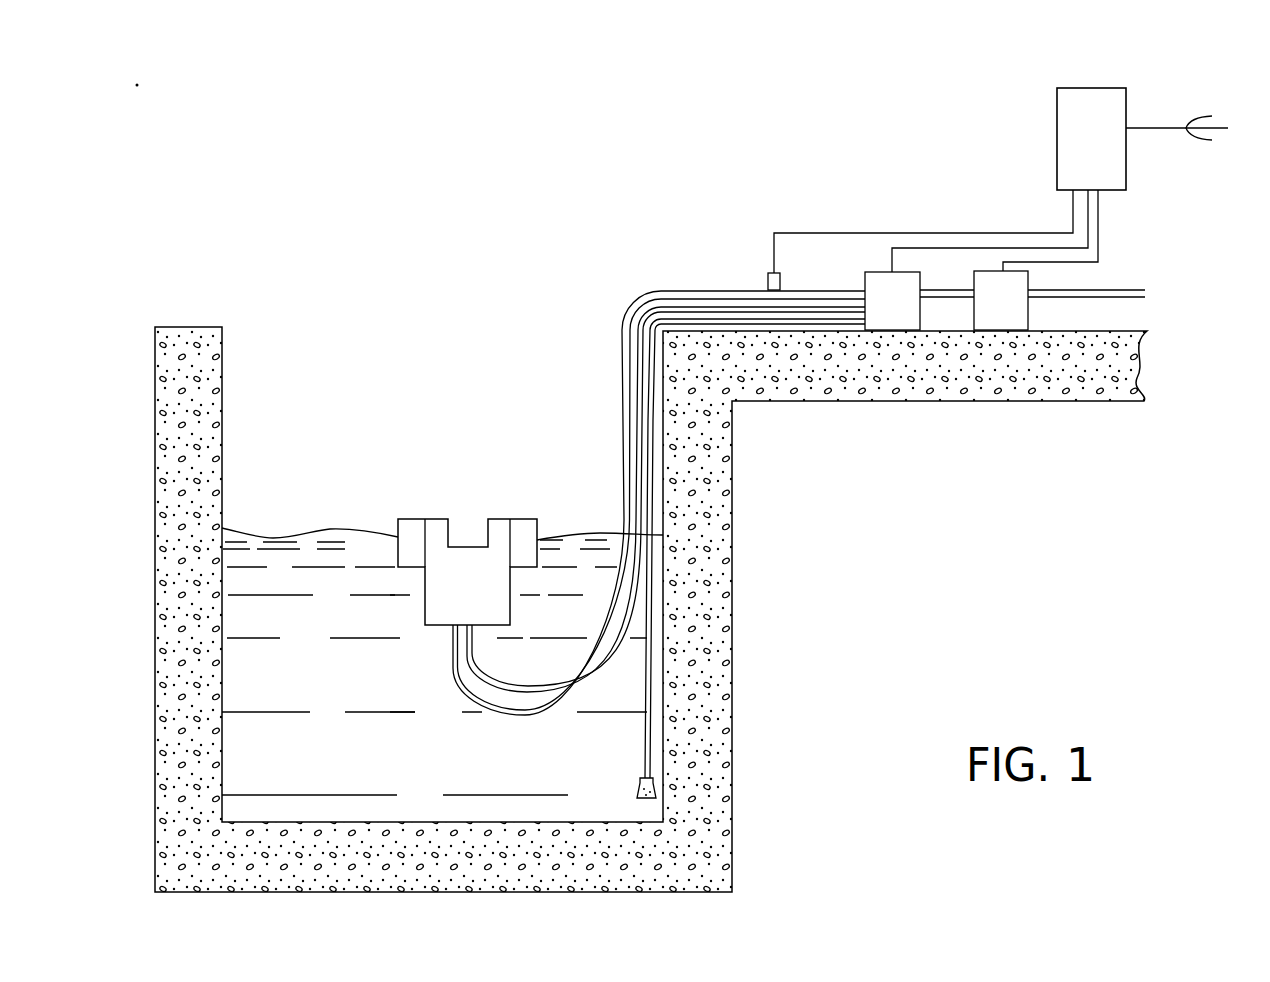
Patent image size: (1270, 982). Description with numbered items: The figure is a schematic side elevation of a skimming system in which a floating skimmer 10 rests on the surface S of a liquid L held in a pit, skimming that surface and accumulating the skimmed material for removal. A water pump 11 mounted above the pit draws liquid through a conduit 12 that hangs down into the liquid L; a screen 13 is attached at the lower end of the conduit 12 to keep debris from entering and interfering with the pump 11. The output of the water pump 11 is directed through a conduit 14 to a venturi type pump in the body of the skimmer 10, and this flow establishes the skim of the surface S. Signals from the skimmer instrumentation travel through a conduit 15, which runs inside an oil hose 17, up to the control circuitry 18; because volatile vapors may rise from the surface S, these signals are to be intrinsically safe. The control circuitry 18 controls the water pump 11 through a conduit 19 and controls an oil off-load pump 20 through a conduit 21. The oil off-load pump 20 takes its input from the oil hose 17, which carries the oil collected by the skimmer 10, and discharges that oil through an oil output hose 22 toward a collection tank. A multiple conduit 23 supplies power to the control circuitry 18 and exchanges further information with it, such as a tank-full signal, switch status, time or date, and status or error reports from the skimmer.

The floating skimmer 10 is at (506, 515).
The water pump 11 is at (907, 281).
The conduit 12 is at (642, 736).
The screen 13 is at (640, 788).
The conduit 14 is at (456, 679).
The conduit 15 is at (842, 232).
The oil hose 17 is at (485, 661).
The control circuitry 18 is at (1090, 88).
The conduit 19 is at (927, 248).
The oil off-load pump 20 is at (1015, 318).
The conduit 21 is at (1100, 232).
The oil output hose 22 is at (1130, 290).
The multiple conduit 23 is at (1218, 128).
The surface S is at (330, 527).
The liquid L is at (320, 690).